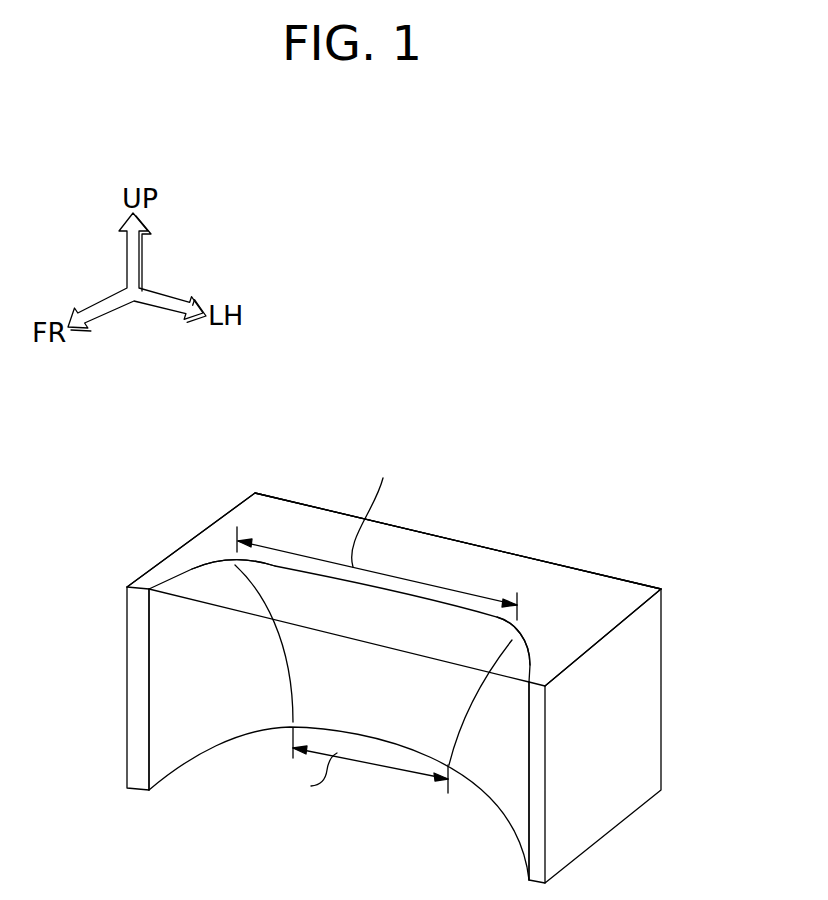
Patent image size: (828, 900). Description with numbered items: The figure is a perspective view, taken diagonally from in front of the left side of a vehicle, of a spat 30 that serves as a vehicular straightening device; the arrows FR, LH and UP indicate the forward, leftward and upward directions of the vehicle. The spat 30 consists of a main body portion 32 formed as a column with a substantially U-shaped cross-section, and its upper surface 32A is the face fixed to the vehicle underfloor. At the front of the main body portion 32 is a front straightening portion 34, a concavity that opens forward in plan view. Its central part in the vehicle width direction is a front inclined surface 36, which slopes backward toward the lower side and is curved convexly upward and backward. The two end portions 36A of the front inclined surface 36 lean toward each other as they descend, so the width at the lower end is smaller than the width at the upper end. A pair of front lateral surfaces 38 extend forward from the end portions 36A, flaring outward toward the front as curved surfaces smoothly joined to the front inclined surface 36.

The spat 30 is at (632, 483).
The main body portion 32 is at (262, 492).
The upper surface 32A is at (432, 553).
The front straightening portion 34 is at (411, 870).
The front inclined surface 36 is at (378, 715).
The end portions 36A is at (262, 603).
The front lateral surfaces 38 is at (217, 720).